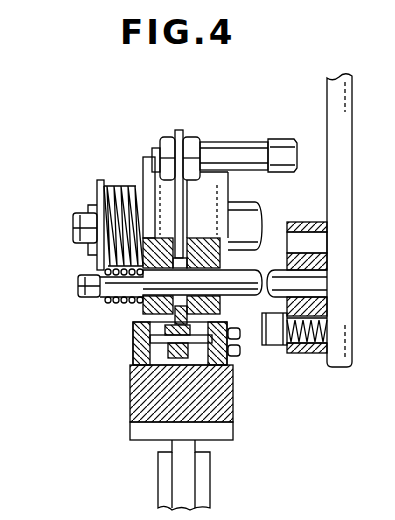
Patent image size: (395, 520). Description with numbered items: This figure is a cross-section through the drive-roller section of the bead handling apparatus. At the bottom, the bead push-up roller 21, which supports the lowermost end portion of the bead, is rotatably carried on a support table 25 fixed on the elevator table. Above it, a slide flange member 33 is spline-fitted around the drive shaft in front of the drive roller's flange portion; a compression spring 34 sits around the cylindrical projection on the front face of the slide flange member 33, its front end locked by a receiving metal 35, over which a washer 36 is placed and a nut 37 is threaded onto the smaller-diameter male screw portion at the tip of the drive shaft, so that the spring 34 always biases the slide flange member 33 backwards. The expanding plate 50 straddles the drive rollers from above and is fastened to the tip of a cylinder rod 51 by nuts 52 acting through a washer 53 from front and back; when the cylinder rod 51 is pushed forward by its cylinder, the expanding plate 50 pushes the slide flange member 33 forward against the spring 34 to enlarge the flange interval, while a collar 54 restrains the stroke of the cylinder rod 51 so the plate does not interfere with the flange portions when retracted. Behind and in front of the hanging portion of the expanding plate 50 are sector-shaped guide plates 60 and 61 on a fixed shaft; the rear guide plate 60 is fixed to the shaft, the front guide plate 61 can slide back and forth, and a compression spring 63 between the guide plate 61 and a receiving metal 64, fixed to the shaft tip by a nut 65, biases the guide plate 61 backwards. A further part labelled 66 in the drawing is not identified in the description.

The bead push-up roller 21 is at (228, 412).
The support table 25 is at (130, 412).
The slide flange member 33 is at (143, 158).
The compression spring 34 is at (100, 185).
The receiving metal 35 is at (97, 193).
The washer 36 is at (93, 257).
The nut 37 is at (80, 208).
The expanding plate 50 is at (179, 130).
The cylinder rod 51 is at (285, 140).
The nuts 52 is at (160, 147).
The washer 53 is at (156, 148).
The collar 54 is at (236, 142).
The rear guide plate 60 is at (222, 298).
The front guide plate 61 is at (138, 322).
The compression spring 63 is at (143, 304).
The receiving metal 64 is at (106, 303).
The nut 65 is at (97, 303).
The nut 66 is at (82, 274).